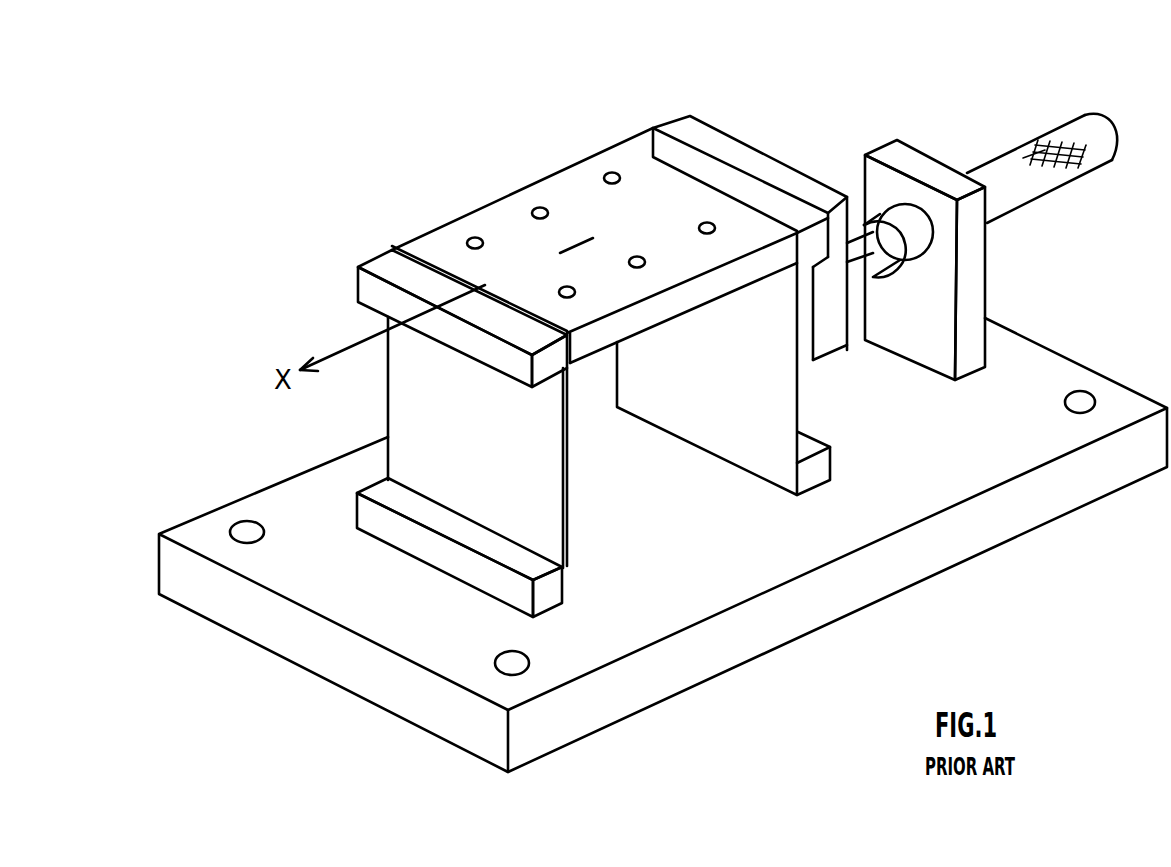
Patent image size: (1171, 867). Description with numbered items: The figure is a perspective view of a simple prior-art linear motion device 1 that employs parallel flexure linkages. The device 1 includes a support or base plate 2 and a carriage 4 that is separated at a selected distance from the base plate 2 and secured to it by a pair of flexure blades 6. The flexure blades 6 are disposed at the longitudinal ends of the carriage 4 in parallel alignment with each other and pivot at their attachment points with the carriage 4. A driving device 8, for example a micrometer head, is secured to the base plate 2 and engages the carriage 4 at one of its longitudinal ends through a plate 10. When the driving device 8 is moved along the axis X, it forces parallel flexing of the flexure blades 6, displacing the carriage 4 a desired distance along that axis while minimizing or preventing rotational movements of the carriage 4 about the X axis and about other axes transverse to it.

The linear motion device 1 is at (852, 60).
The base plate 2 is at (1062, 492).
The carriage 4 is at (577, 172).
The flexure blades 6 is at (771, 386).
The driving device 8 is at (927, 167).
The plate 10 is at (752, 158).